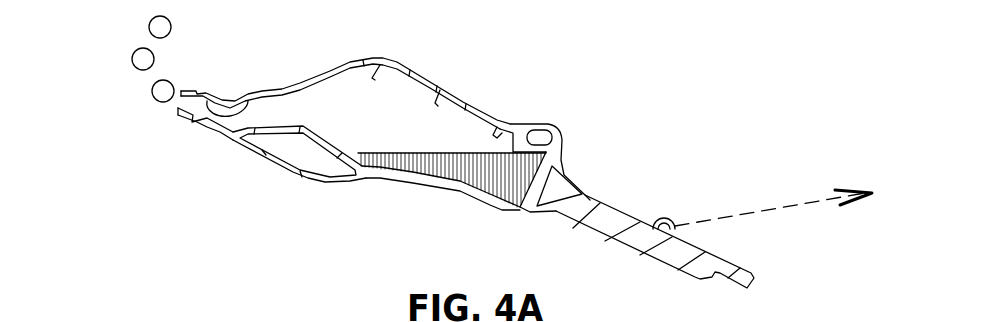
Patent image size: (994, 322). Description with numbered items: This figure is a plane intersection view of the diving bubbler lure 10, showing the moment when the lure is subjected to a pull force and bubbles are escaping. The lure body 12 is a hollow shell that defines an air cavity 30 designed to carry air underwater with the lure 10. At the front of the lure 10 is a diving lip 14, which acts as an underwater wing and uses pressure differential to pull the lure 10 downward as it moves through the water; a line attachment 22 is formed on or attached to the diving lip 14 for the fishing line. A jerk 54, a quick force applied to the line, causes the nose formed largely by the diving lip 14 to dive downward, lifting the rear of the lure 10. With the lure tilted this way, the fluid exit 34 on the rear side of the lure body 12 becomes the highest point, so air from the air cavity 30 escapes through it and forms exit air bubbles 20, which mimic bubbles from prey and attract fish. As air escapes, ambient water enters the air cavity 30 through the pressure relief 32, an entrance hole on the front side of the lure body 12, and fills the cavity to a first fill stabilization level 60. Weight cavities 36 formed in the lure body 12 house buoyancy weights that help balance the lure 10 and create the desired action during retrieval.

The lure 10 is at (714, 70).
The lure body 12 is at (395, 173).
The diving lip 14 is at (599, 225).
The air bubbles 20 is at (137, 58).
The line attachment 22 is at (663, 217).
The air cavity 30 is at (560, 136).
The pressure relief 32 is at (503, 211).
The fluid exit 34 is at (240, 110).
The weight cavities 36 is at (283, 158).
The jerk 54 is at (797, 202).
The first fill stabilization level 60 is at (513, 152).